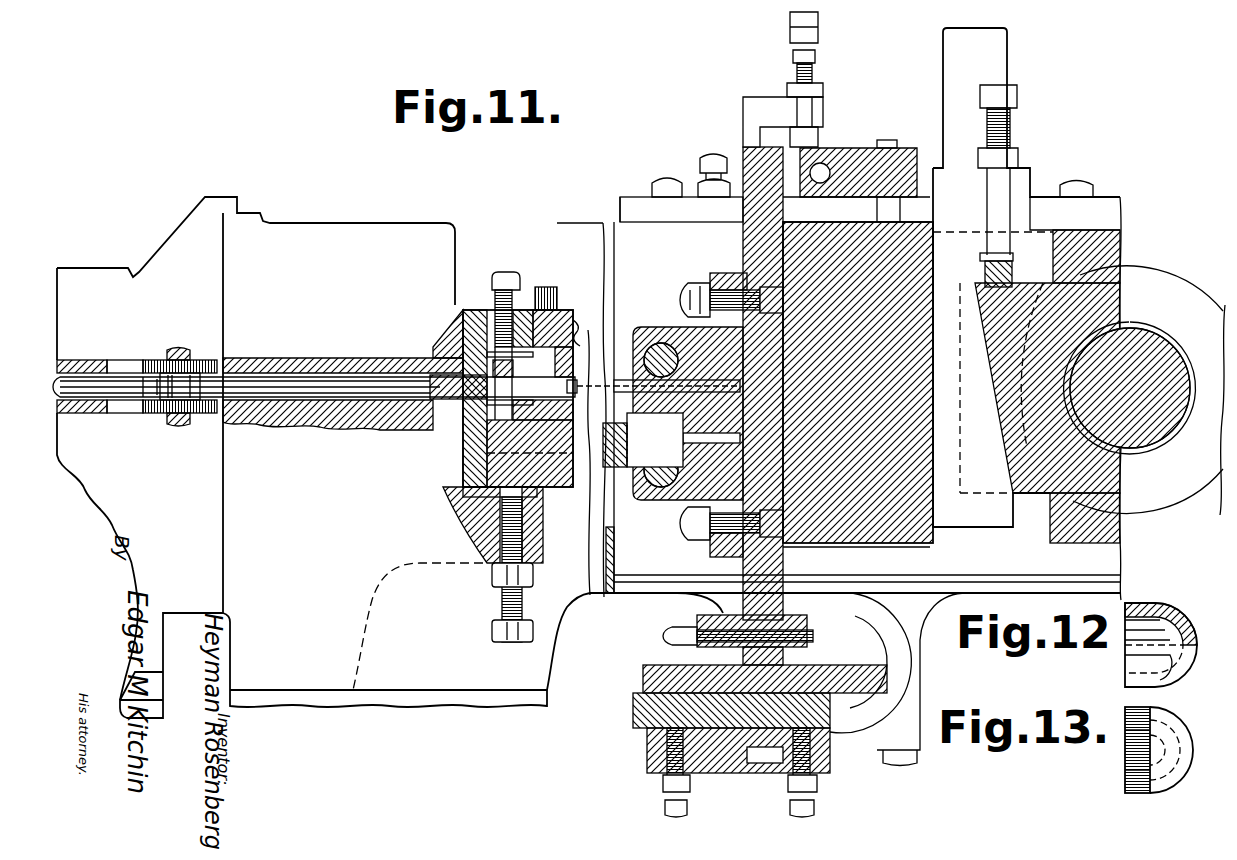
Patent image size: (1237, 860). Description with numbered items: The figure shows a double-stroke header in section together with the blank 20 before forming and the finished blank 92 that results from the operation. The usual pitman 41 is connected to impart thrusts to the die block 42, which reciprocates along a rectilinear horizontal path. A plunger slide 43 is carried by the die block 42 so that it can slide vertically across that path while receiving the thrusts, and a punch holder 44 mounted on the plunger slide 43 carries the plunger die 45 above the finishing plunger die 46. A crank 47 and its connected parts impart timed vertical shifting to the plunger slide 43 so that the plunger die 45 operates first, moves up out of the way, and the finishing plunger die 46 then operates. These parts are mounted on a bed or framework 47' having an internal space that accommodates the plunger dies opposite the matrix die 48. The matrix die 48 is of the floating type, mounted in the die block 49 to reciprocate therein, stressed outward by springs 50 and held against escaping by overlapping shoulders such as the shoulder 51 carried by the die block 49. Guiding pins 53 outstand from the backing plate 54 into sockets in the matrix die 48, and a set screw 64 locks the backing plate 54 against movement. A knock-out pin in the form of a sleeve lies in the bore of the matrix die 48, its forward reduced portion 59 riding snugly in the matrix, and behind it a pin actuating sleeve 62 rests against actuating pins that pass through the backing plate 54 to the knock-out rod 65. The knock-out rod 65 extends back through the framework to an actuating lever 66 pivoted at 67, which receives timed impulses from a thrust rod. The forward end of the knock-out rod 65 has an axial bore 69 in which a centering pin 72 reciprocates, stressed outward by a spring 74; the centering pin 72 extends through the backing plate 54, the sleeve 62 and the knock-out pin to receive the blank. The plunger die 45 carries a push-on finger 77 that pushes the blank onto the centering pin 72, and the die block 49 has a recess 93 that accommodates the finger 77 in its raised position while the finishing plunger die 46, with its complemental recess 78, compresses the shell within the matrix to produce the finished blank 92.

In FIG. 12, the blank 20 is at (1160, 608).
In FIG. 11, the pitman 41 is at (1205, 495).
In FIG. 11, the die block 42 is at (893, 530).
In FIG. 11, the plunger slide 43 is at (760, 565).
In FIG. 11, the punch holder 44 is at (723, 280).
In FIG. 11, the plunger die 45 is at (633, 352).
In FIG. 11, the finishing plunger die 46 is at (598, 531).
In FIG. 11, the crank 47 is at (772, 705).
In FIG. 11, the bed or framework 47' is at (589, 481).
In FIG. 11, the matrix die 48 is at (582, 400).
In FIG. 11, the die block 49 is at (545, 497).
In FIG. 11, the springs 50 is at (432, 445).
In FIG. 11, the shoulder 51 is at (560, 356).
In FIG. 11, the guiding pins 53 is at (446, 475).
In FIG. 11, the backing plate 54 is at (475, 310).
In FIG. 11, the reduced portion of knock-out pin 59 is at (572, 386).
In FIG. 11, the pin actuating sleeve 62 is at (538, 306).
In FIG. 11, the set screw 64 is at (504, 272).
In FIG. 11, the knock-out rod 65 is at (295, 417).
In FIG. 11, the actuating lever 66 is at (180, 396).
In FIG. 11, the pivot 67 is at (172, 357).
In FIG. 11, the axial bore 69 is at (432, 368).
In FIG. 11, the centering pin 72 is at (456, 368).
In FIG. 11, the spring 74 is at (466, 362).
In FIG. 11, the push-on tool or finger 77 is at (626, 322).
In FIG. 11, the matrix or recess 78 is at (634, 430).
In FIG. 13, the finished blank 92 is at (1160, 718).
In FIG. 11, the recess 93 is at (576, 320).